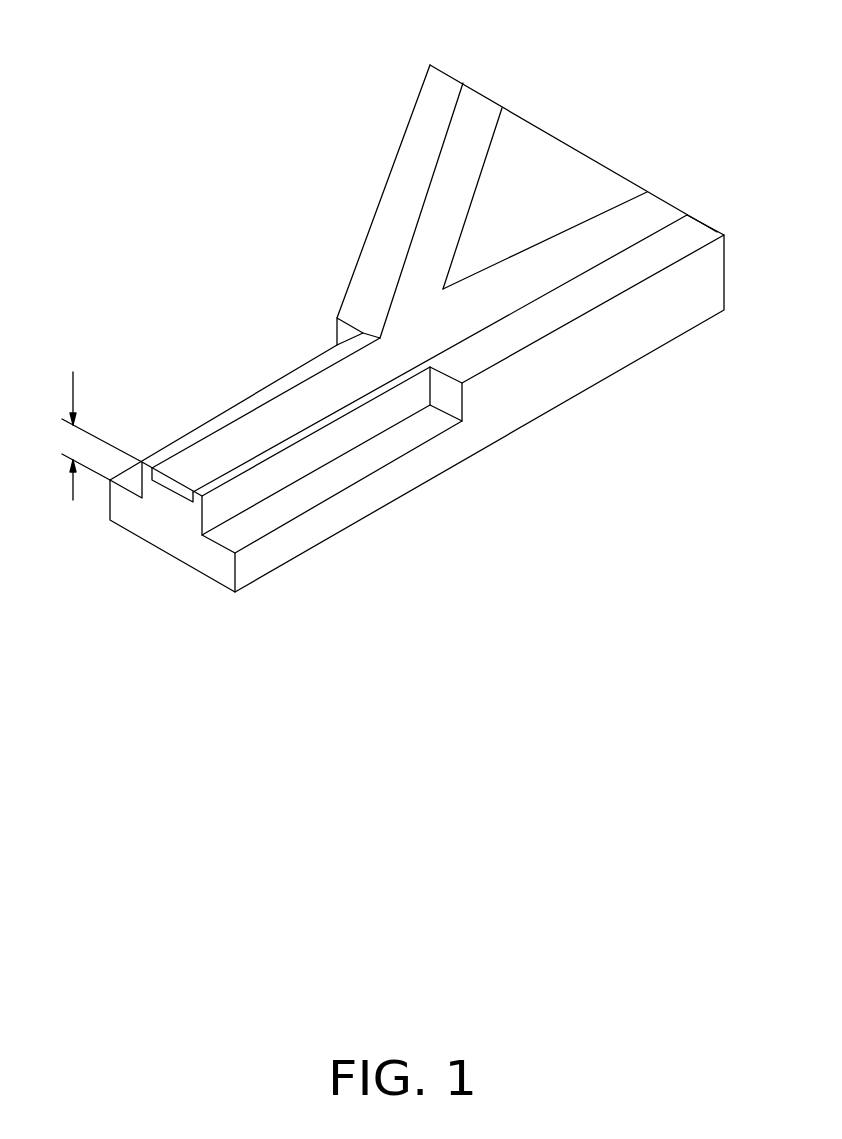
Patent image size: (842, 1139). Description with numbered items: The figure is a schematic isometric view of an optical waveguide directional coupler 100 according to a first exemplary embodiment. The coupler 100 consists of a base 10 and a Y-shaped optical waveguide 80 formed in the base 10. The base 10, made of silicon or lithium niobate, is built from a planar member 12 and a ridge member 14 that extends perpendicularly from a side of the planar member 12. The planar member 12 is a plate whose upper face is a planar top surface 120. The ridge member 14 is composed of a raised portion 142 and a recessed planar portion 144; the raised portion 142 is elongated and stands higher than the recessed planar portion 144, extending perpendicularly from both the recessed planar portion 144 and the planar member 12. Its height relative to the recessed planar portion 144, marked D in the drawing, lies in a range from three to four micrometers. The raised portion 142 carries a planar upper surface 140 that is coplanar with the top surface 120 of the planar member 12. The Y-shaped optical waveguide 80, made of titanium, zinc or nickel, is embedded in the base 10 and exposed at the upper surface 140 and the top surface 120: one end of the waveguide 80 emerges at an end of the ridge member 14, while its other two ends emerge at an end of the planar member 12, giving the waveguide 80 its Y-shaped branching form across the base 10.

The optical waveguide directional coupler 100 is at (401, 364).
The base 10 is at (385, 443).
The planar member 12 is at (580, 362).
The top surface 120 is at (372, 292).
The Y-shaped optical waveguide 80 is at (657, 210).
The ridge member 14 is at (367, 443).
The upper surface 140 is at (217, 482).
The raised portion 142 is at (198, 502).
The recessed planar portion 144 is at (142, 515).